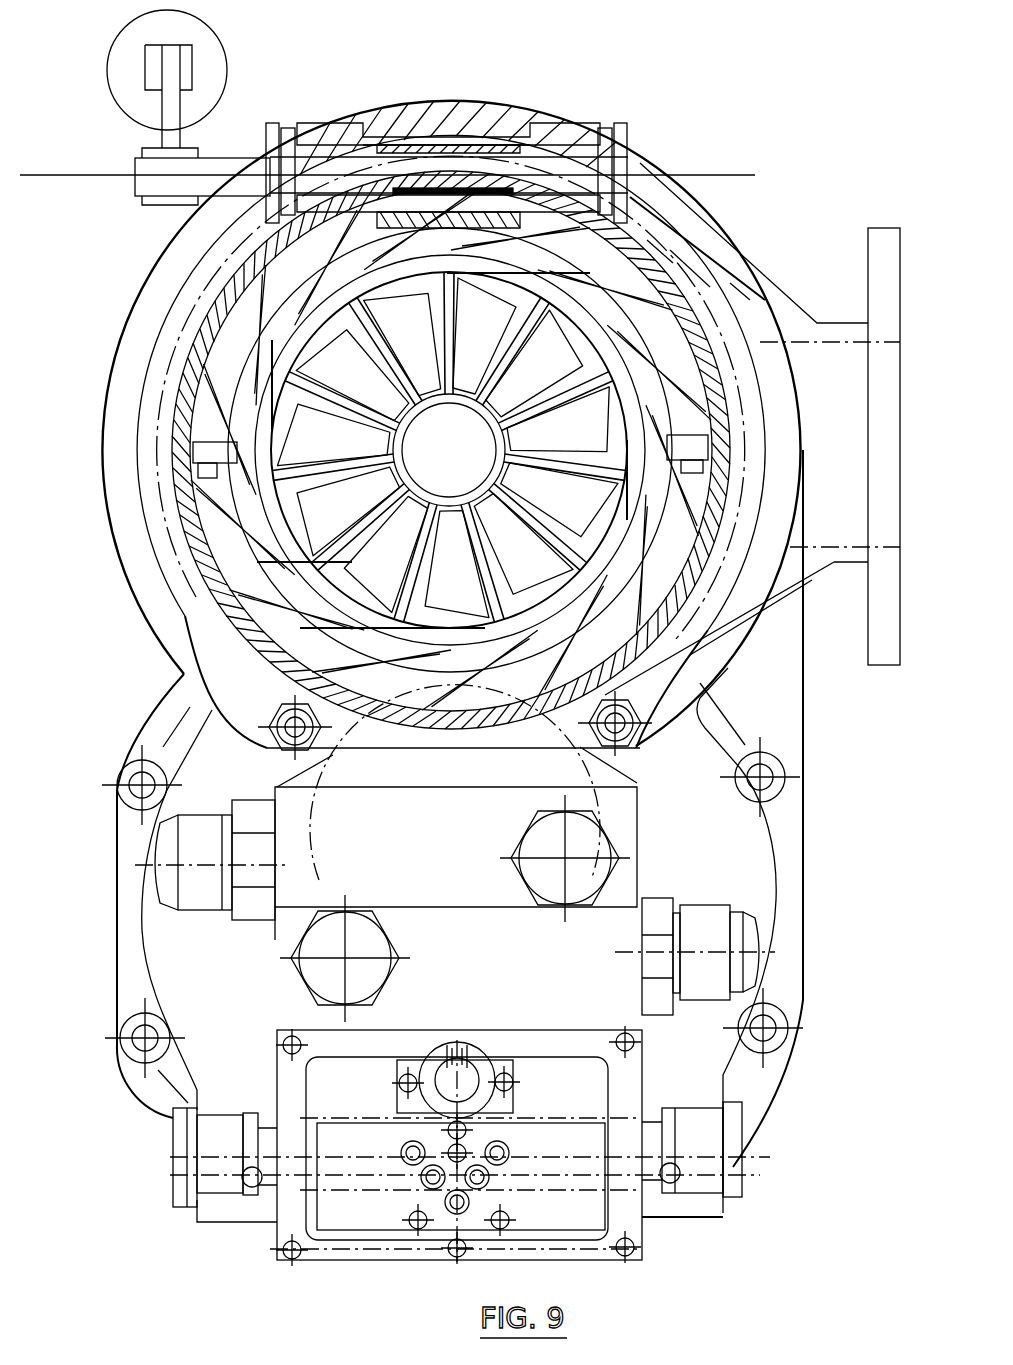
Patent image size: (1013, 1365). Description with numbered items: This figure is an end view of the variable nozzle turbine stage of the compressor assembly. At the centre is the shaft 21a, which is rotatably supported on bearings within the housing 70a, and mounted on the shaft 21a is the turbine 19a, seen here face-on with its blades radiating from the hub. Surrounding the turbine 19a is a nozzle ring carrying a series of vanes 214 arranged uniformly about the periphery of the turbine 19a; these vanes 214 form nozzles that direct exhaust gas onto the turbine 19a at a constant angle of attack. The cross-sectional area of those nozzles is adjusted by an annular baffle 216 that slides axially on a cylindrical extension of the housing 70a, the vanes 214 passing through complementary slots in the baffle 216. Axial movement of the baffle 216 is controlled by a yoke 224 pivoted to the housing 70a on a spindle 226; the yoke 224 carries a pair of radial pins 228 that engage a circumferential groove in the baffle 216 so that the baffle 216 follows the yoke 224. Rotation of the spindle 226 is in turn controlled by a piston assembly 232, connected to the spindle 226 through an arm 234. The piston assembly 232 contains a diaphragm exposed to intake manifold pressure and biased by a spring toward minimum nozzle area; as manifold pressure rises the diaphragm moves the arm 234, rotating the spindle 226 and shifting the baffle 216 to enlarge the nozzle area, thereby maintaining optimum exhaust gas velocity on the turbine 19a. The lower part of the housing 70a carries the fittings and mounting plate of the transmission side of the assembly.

The turbine 19a is at (230, 530).
The shaft 21a is at (450, 452).
The housing 70a is at (452, 858).
The vanes 214 is at (457, 682).
The baffle 216 is at (533, 657).
The yoke 224 is at (693, 402).
The spindle 226 is at (565, 160).
The radial pins 228 is at (454, 477).
The piston assembly 232 is at (204, 43).
The arm 234 is at (165, 128).